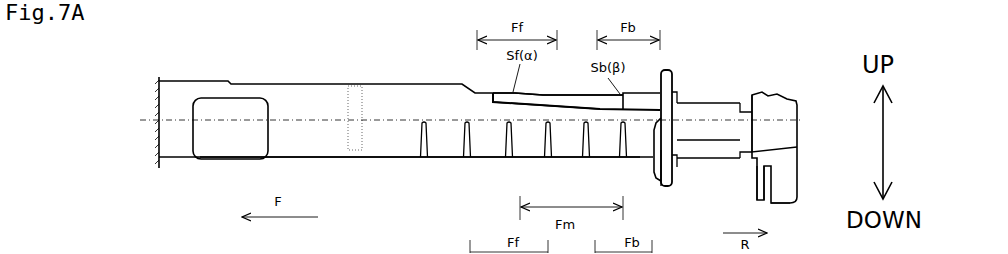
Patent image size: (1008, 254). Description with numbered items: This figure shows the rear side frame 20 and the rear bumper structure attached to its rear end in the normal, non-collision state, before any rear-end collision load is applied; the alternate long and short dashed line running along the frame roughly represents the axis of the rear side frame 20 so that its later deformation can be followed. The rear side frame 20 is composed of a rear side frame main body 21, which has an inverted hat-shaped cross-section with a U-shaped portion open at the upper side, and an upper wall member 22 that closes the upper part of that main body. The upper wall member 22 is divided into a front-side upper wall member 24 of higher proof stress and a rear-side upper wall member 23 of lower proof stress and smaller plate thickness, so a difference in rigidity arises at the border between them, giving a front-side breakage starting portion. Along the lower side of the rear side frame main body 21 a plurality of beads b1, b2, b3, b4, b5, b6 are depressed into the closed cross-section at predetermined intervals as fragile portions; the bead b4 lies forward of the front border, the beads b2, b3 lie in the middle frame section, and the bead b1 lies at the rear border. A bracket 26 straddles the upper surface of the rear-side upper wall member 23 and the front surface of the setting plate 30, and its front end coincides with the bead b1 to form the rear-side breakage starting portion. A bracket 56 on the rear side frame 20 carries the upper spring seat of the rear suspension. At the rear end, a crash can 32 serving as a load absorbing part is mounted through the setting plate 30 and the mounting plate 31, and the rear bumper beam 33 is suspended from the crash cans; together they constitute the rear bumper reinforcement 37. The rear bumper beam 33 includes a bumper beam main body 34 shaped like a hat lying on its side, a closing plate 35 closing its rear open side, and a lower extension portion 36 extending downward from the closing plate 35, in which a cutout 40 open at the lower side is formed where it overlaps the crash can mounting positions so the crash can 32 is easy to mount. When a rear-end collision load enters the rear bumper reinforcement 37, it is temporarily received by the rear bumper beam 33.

The rear side frame 20 is at (293, 76).
The rear side frame main body 21 is at (376, 152).
The upper wall member 22 is at (576, 101).
The rear-side upper wall member 23 is at (570, 95).
The front-side upper wall member 24 is at (496, 96).
The bracket 26 is at (640, 93).
The setting plate 30 is at (655, 178).
The mounting plate 31 is at (673, 166).
The crash can 32 is at (700, 104).
The rear bumper beam 33 is at (798, 144).
The bumper beam main body 34 is at (726, 120).
The closing plate 35 is at (776, 105).
The lower extension portion 36 is at (786, 204).
The rear bumper reinforcement 37 is at (692, 82).
The cutout 40 is at (750, 178).
The bracket 56 is at (226, 161).
The bead b1 is at (619, 156).
The bead b2 is at (582, 156).
The bead b3 is at (544, 156).
The bead b4 is at (505, 156).
The bead b5 is at (463, 156).
The bead b6 is at (420, 156).